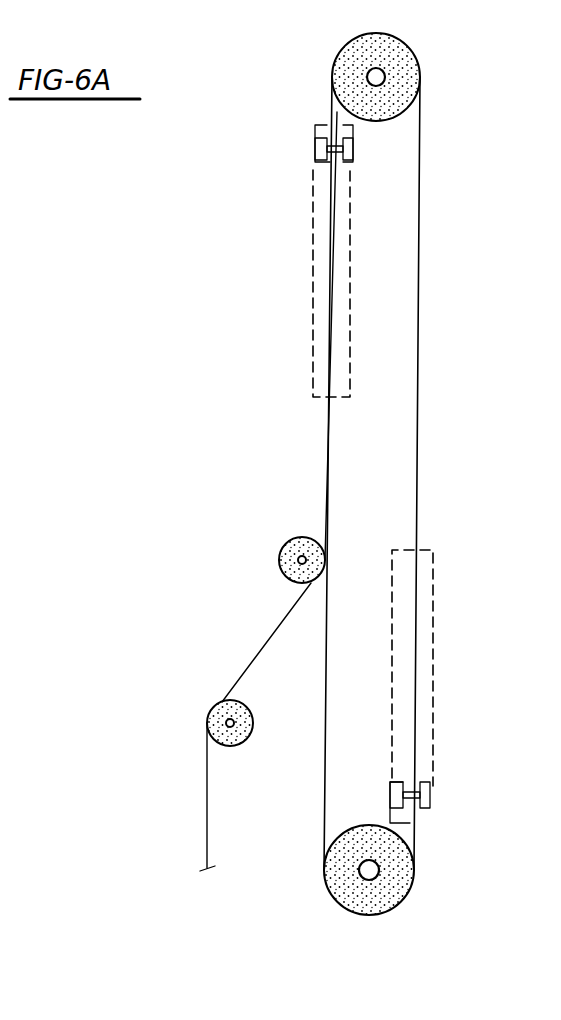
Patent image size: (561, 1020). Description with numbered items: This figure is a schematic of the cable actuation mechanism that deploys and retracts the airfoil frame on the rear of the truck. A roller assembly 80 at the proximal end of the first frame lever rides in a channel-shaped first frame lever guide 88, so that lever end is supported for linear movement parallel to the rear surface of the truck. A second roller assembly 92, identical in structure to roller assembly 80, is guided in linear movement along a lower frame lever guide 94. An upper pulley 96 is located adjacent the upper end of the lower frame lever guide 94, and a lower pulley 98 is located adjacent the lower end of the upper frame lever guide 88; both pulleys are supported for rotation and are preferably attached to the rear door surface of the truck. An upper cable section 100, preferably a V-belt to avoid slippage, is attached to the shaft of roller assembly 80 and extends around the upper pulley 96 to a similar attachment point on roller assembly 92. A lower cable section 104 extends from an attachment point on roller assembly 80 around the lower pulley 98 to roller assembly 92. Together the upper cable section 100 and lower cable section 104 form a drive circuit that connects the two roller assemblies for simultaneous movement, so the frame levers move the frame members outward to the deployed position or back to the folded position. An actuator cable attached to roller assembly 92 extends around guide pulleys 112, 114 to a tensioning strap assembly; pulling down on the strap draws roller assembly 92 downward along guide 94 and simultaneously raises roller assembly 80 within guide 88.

The roller assembly 80 is at (440, 830).
The first frame lever guide 88 is at (472, 668).
The roller assembly 92 is at (310, 116).
The lower frame lever guide 94 is at (291, 283).
The upper pulley 96 is at (413, 77).
The lower pulley 98 is at (329, 870).
The upper cable section 100 is at (417, 473).
The lower cable section 104 is at (268, 491).
The guide pulley 112 is at (257, 547).
The guide pulley 114 is at (186, 712).